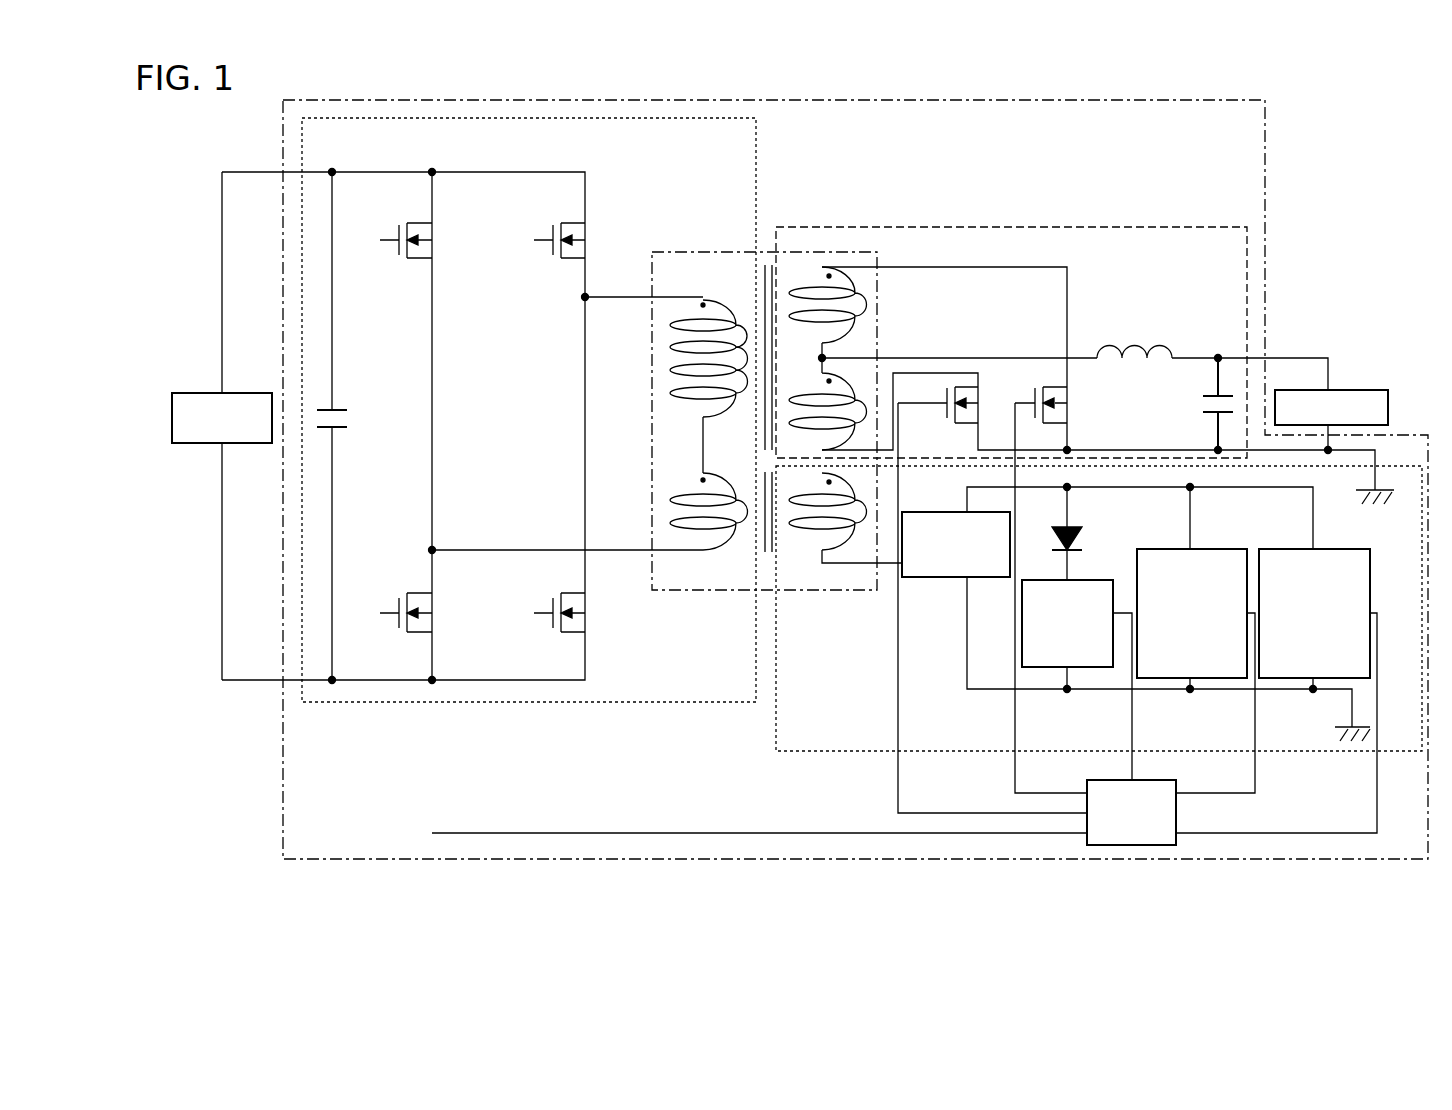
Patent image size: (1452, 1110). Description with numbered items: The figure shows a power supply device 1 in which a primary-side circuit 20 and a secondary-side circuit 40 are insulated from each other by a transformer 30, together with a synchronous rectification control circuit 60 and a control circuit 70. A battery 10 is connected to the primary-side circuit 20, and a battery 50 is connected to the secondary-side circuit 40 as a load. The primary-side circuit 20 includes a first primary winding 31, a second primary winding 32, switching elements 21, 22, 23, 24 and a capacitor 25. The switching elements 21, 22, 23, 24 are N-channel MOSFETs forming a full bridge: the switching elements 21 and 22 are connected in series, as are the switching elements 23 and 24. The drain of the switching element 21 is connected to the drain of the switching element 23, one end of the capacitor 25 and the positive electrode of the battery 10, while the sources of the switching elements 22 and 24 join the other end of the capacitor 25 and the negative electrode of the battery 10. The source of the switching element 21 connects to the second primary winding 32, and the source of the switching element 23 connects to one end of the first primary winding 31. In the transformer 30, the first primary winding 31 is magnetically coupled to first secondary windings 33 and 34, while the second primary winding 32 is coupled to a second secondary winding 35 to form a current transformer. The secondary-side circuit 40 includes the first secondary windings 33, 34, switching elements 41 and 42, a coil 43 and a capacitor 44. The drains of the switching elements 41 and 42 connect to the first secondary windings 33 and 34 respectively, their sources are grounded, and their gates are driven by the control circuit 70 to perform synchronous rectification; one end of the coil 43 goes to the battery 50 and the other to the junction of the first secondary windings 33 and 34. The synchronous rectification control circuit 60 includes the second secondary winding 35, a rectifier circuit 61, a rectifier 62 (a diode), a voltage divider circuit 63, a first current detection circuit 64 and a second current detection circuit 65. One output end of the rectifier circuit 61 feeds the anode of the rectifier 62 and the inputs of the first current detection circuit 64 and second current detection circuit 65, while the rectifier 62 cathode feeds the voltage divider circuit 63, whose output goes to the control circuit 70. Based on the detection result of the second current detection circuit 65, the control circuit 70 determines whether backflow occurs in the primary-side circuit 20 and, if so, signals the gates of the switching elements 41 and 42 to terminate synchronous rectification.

The power supply device 1 is at (1270, 120).
The battery 10 is at (196, 390).
The primary-side circuit 20 is at (758, 138).
The switching element 21 is at (420, 240).
The switching element 22 is at (420, 613).
The switching element 23 is at (574, 240).
The switching element 24 is at (574, 613).
The capacitor 25 is at (340, 410).
The transformer 30 is at (720, 252).
The first primary winding 31 is at (708, 304).
The second primary winding 32 is at (690, 480).
The first secondary winding 33 is at (828, 320).
The first secondary winding 34 is at (836, 400).
The second secondary winding 35 is at (826, 528).
The secondary-side circuit 40 is at (830, 227).
The switching element 41 is at (1056, 403).
The switching element 42 is at (968, 403).
The coil 43 is at (1170, 340).
The capacitor 44 is at (1203, 405).
The battery 50 is at (1362, 388).
The synchronous rectification control circuit 60 is at (776, 718).
The rectifier circuit 61 is at (942, 580).
The rectifier 62 is at (1078, 530).
The voltage divider circuit 63 is at (1080, 580).
The first current detection circuit 64 is at (1203, 549).
The second current detection circuit 65 is at (1323, 549).
The control circuit 70 is at (1155, 780).